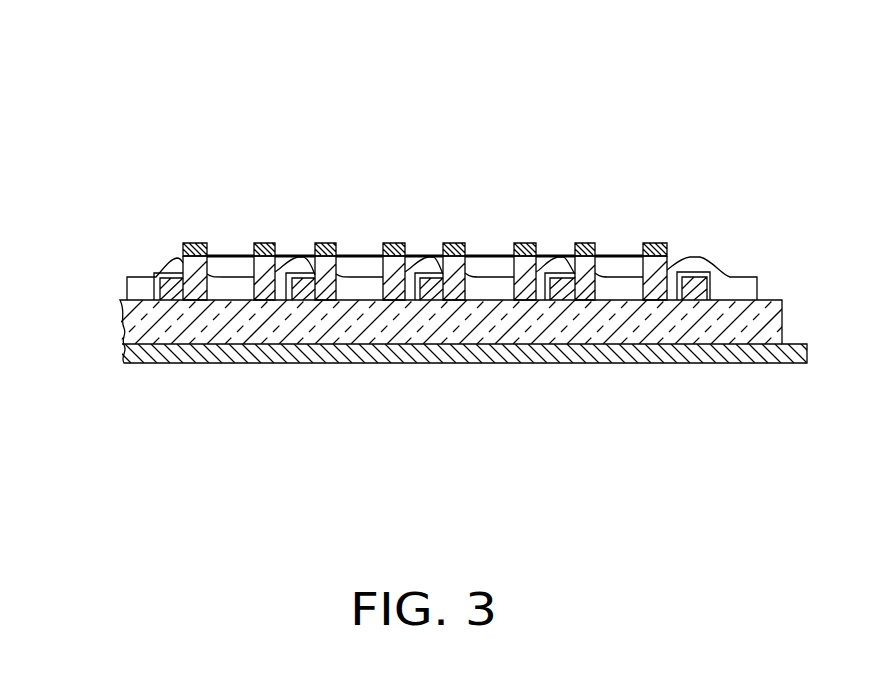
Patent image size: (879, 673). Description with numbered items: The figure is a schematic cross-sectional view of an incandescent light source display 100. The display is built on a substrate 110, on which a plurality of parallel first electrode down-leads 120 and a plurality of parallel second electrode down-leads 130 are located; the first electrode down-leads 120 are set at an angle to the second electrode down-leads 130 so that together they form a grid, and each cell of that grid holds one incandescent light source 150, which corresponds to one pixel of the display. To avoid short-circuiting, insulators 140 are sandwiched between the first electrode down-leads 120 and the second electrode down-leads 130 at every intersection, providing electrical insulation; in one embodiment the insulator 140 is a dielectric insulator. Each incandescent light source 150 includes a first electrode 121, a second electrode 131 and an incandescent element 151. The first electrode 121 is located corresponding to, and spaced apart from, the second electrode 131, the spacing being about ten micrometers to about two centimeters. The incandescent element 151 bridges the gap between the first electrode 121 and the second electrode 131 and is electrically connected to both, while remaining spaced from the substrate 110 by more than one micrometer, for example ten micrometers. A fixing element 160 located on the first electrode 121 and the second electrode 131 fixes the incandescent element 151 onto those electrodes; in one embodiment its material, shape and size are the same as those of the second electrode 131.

The incandescent light source display 100 is at (422, 63).
The substrate 110 is at (288, 338).
The first electrode down-lead 120 is at (137, 281).
The first electrode 121 is at (398, 262).
The second electrode down-lead 130 is at (297, 281).
The second electrode 131 is at (327, 272).
The insulator 140 is at (162, 281).
The incandescent light source 150 is at (425, 202).
The incandescent element 151 is at (368, 256).
The fixing element 160 is at (517, 243).